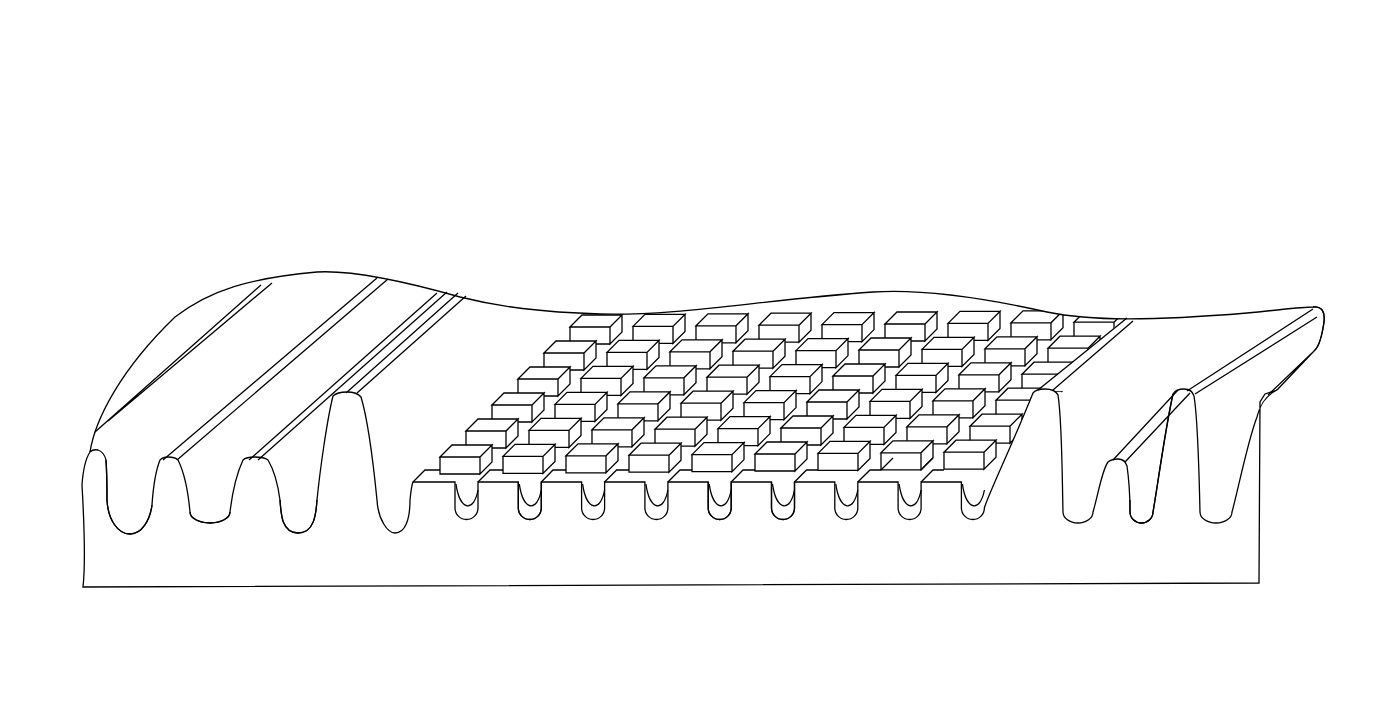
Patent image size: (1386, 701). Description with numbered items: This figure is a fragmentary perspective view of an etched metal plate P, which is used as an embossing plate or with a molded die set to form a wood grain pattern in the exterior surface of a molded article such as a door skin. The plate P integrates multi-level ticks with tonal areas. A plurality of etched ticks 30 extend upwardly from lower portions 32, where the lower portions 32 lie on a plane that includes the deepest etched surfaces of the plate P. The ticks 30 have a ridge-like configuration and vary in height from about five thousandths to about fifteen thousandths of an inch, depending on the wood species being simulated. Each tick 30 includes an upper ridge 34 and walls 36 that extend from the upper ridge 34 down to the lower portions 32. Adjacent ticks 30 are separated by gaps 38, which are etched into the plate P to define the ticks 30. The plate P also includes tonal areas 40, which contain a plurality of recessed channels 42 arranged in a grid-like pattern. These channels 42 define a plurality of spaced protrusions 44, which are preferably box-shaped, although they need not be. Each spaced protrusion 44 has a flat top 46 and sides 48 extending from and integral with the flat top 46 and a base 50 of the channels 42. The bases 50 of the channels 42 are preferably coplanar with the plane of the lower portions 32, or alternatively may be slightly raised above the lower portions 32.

The etched plate P is at (180, 266).
The etched ticks 30 is at (266, 284).
The lower portions 32 is at (206, 520).
The upper ridge 34 is at (1128, 318).
The walls 36 is at (416, 397).
The gaps 38 is at (1205, 305).
The tonal areas 40 is at (474, 297).
The recessed channels 42 is at (626, 330).
The spaced protrusions 44 is at (576, 337).
The flat top 46 is at (898, 472).
The sides 48 is at (524, 505).
The base 50 is at (720, 517).